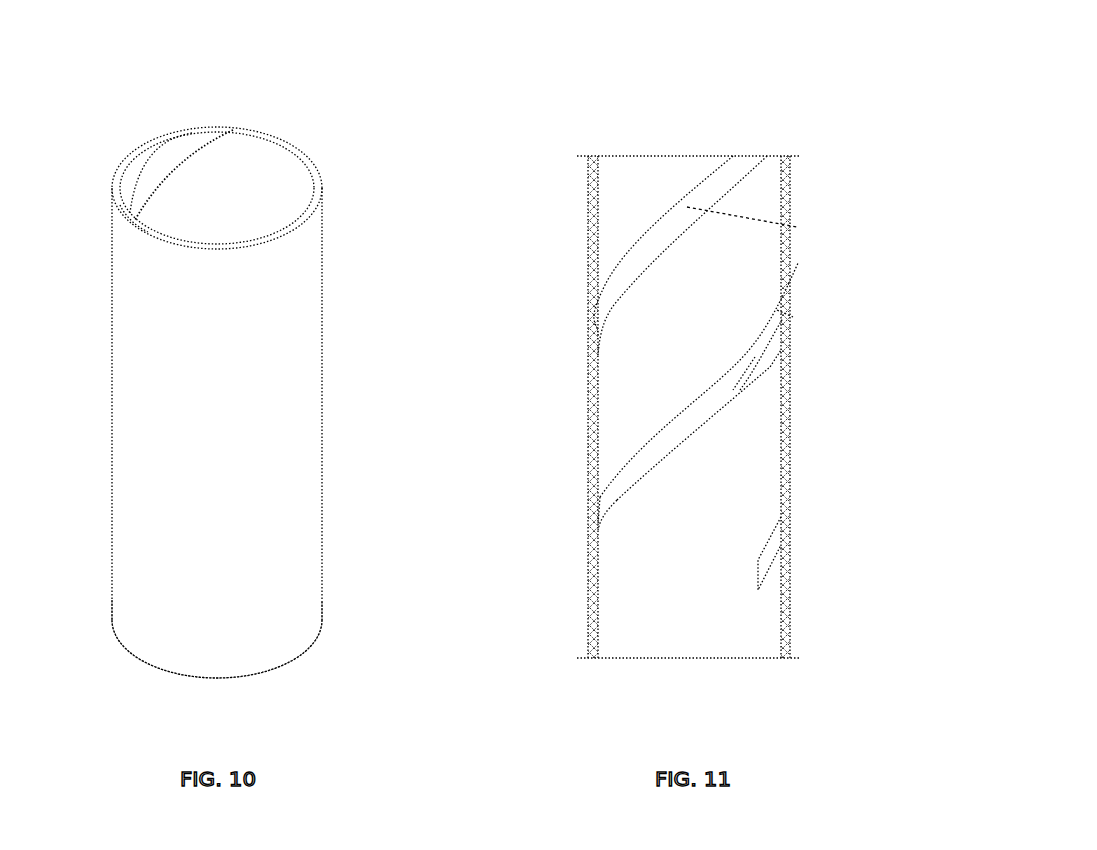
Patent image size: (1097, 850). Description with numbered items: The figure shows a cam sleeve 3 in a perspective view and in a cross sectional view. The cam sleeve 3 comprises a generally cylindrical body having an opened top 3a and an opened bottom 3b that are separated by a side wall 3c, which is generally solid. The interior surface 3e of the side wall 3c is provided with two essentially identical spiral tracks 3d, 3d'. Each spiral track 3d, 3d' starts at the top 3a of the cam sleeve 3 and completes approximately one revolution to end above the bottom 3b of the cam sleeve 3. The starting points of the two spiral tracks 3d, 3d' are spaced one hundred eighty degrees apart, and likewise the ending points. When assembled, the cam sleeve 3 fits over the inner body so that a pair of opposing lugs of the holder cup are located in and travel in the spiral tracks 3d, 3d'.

In FIG. 10, the cam sleeve 3 is at (300, 130).
In FIG. 11, the cam sleeve 3 is at (785, 107).
In FIG. 10, the opened top 3a is at (322, 177).
In FIG. 11, the opened top 3a is at (787, 150).
In FIG. 10, the opened bottom 3b is at (308, 650).
In FIG. 11, the opened bottom 3b is at (787, 660).
In FIG. 10, the side wall 3c is at (248, 390).
In FIG. 10, the spiral track 3d is at (163, 163).
In FIG. 11, the spiral track 3d is at (720, 255).
In FIG. 11, the spiral track 3d' is at (752, 394).
In FIG. 11, the interior surface 3e is at (752, 473).